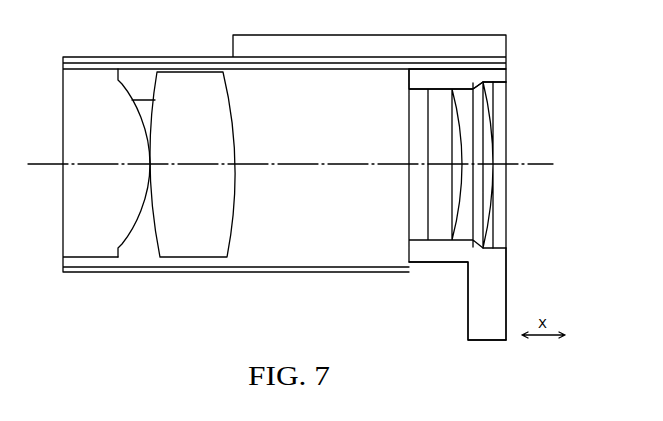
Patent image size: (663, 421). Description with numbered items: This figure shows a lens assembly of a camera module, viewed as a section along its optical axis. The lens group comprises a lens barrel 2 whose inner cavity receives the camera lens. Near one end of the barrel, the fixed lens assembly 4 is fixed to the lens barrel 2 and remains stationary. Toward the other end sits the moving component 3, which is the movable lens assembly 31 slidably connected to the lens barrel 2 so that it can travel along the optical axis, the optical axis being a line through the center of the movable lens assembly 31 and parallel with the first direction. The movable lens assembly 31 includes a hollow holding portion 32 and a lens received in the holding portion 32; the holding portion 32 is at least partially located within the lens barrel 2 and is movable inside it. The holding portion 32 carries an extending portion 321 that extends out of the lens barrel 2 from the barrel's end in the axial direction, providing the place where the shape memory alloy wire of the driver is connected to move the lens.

The lens barrel 2 is at (188, 60).
The fixed lens assembly 4 is at (92, 82).
The moving component 3 is at (487, 201).
The movable lens assembly 31 is at (488, 148).
The holding portion 32 is at (497, 72).
The extending portion 321 is at (492, 282).